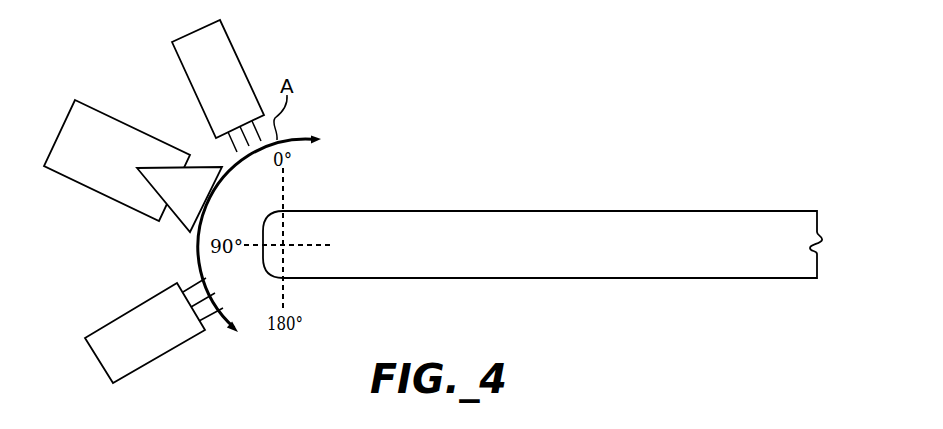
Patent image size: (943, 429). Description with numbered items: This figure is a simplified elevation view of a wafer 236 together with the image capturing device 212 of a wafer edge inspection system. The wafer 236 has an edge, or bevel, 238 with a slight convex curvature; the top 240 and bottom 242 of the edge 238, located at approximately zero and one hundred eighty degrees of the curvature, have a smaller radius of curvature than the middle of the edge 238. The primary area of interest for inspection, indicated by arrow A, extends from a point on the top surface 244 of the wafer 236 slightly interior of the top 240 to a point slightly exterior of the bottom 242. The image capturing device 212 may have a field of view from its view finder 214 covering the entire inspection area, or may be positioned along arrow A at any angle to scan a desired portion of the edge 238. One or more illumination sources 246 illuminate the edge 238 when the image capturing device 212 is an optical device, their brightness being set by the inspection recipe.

The image capturing device 212 is at (103, 111).
The view finder 214 is at (203, 167).
The wafer 236 is at (596, 203).
The edge 238 is at (254, 264).
The top 240 is at (292, 211).
The bottom 242 is at (283, 280).
The top surface 244 is at (518, 211).
The illumination sources 246 is at (250, 82).